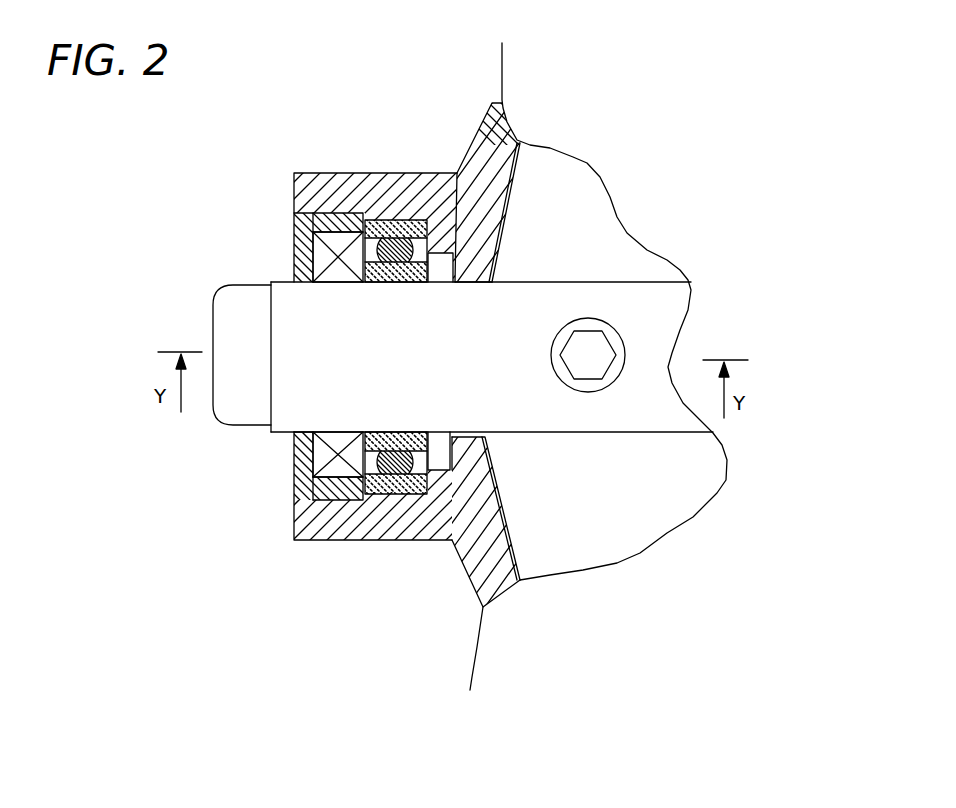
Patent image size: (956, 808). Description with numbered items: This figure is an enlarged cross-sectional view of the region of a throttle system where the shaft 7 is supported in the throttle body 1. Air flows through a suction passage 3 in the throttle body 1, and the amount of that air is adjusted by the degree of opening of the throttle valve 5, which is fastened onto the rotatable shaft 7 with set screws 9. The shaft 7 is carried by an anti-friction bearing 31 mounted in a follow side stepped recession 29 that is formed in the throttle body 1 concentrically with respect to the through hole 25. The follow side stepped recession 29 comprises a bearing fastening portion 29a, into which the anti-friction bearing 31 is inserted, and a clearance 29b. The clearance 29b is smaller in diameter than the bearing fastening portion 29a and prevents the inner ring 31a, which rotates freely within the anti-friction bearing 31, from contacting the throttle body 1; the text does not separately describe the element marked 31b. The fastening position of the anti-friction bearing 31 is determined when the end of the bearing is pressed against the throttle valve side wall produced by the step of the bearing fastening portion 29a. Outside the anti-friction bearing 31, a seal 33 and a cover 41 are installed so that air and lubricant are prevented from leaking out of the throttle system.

The throttle body 1 is at (330, 523).
The suction passage 3 is at (493, 104).
The throttle valve 5 is at (598, 242).
The shaft 7 is at (512, 298).
The set screws 9 is at (595, 353).
The through hole 25 is at (440, 253).
The follow side stepped recession 29 is at (388, 296).
The bearing fastening portion 29a is at (413, 230).
The clearance 29b is at (410, 246).
The anti-friction bearing 31 is at (375, 350).
The inner ring 31a is at (302, 222).
The holder axial portion 31b is at (345, 214).
The seal 33 is at (313, 452).
The cover 41 is at (313, 236).